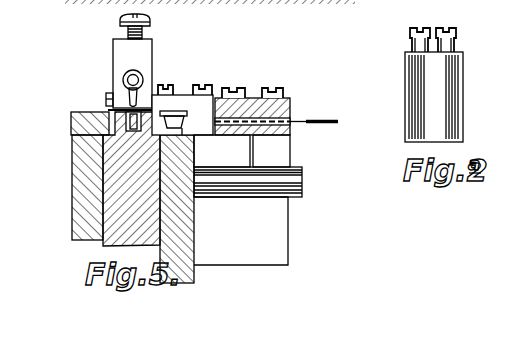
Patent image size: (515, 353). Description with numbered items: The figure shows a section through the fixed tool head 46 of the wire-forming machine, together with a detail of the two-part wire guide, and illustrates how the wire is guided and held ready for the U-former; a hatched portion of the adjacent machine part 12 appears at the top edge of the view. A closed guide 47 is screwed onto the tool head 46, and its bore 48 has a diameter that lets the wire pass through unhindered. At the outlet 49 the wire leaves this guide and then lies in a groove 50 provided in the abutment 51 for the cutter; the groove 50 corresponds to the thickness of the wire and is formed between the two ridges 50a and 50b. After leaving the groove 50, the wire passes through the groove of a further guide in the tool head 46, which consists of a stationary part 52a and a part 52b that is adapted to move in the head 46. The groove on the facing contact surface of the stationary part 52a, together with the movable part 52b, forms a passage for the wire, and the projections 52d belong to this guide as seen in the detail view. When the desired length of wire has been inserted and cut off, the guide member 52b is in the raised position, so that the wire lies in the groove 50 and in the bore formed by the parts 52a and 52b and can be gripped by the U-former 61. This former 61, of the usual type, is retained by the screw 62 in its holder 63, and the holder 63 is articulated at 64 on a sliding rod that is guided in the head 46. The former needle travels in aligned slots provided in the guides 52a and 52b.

In FIG. 5, the housing 12 is at (218, 1).
In FIG. 5, the tool head 46 is at (283, 220).
In FIG. 5, the closed guide 47 is at (249, 99).
In FIG. 5, the bore 48 is at (291, 112).
In FIG. 5, the outlet of guide 49 is at (222, 151).
In FIG. 5, the groove 50 is at (206, 121).
In FIG. 5, the ridge 50a is at (161, 95).
In FIG. 5, the ridge 50b is at (213, 134).
In FIG. 5, the abutment for the cutter 51 is at (156, 111).
In FIG. 2A, the stationary part of guide 52a is at (464, 85).
In FIG. 5, the movable guide part 52b is at (131, 179).
In FIG. 2A, the projection of insert 52d is at (476, 32).
In FIG. 5, the U-former 61 is at (146, 79).
In FIG. 5, the screw 62 is at (150, 22).
In FIG. 5, the holder 63 is at (146, 59).
In FIG. 5, the articulation 64 is at (106, 99).